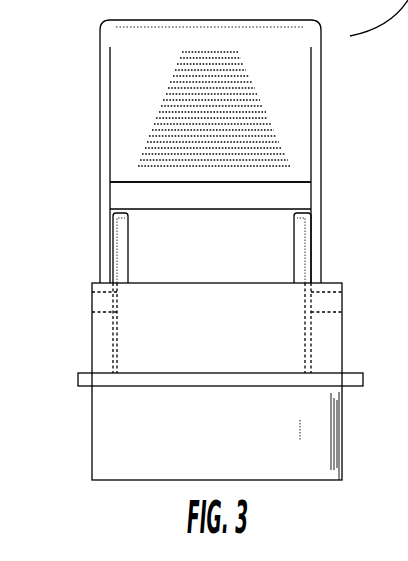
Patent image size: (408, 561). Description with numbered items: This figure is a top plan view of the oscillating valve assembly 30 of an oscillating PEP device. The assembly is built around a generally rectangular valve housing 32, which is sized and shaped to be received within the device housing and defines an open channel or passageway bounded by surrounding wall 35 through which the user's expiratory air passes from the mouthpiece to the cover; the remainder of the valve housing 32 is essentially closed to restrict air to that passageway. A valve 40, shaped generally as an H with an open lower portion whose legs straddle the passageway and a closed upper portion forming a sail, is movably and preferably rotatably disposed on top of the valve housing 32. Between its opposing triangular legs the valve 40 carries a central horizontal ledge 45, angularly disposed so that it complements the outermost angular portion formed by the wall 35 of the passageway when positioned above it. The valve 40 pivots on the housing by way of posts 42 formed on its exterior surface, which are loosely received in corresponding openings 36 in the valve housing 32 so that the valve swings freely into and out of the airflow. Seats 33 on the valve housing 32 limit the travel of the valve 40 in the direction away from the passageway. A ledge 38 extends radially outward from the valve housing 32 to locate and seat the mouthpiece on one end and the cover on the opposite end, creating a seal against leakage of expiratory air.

The oscillating valve assembly 30 is at (57, 98).
The valve 40 is at (133, 68).
The central horizontal ledge 45 is at (284, 198).
The wall 35 is at (178, 238).
The seat 33 is at (302, 245).
The opening 36 is at (92, 298).
The post 42 is at (333, 300).
The ledge 38 is at (77, 378).
The valve housing 32 is at (91, 433).